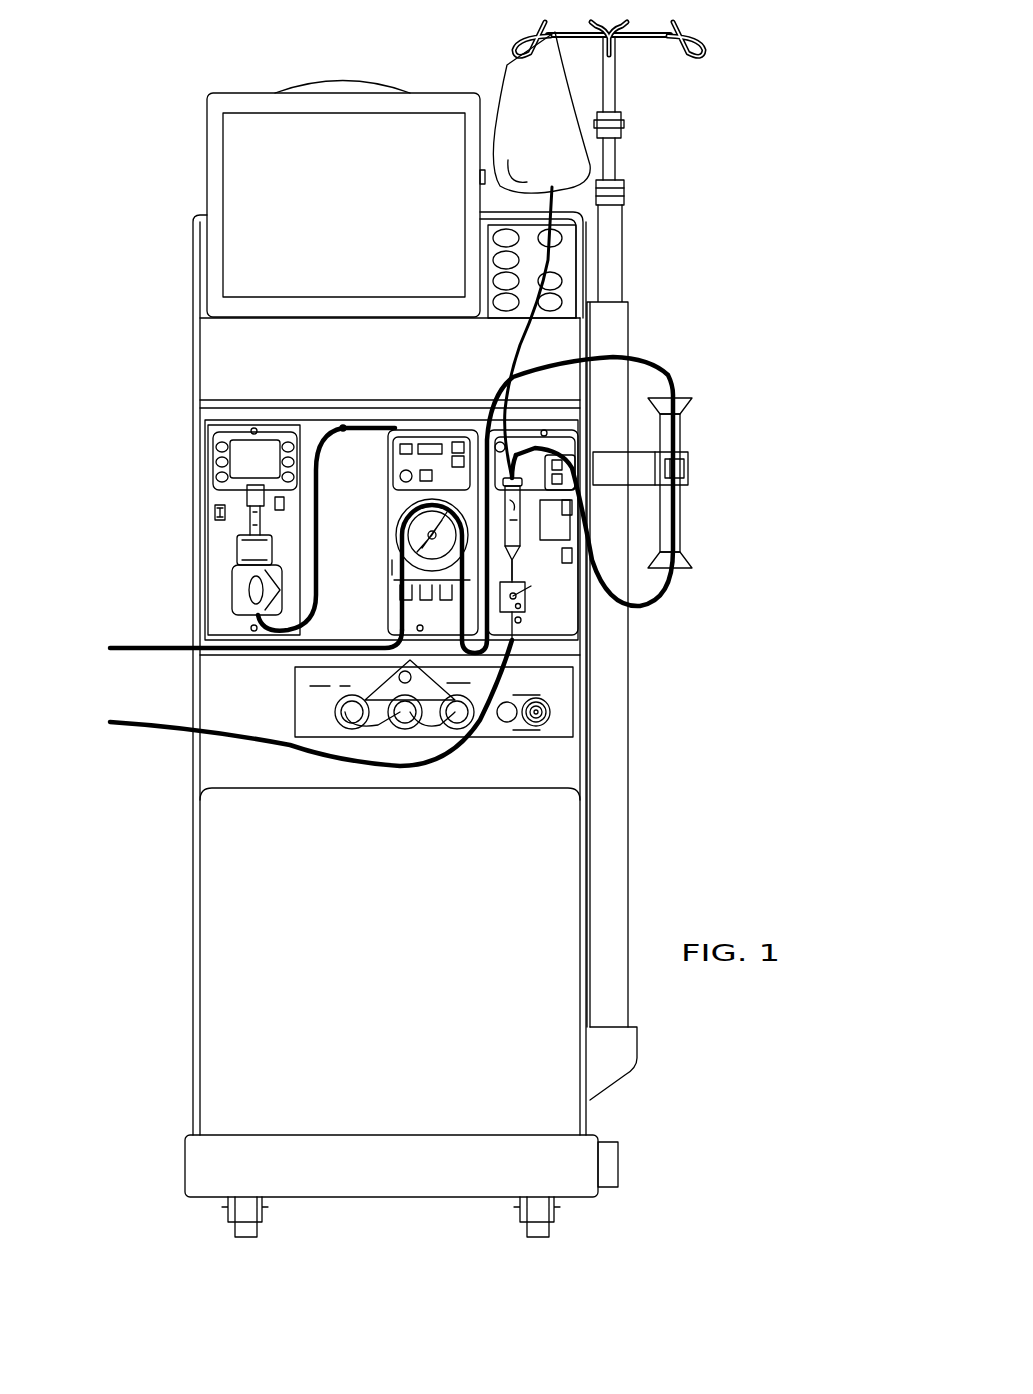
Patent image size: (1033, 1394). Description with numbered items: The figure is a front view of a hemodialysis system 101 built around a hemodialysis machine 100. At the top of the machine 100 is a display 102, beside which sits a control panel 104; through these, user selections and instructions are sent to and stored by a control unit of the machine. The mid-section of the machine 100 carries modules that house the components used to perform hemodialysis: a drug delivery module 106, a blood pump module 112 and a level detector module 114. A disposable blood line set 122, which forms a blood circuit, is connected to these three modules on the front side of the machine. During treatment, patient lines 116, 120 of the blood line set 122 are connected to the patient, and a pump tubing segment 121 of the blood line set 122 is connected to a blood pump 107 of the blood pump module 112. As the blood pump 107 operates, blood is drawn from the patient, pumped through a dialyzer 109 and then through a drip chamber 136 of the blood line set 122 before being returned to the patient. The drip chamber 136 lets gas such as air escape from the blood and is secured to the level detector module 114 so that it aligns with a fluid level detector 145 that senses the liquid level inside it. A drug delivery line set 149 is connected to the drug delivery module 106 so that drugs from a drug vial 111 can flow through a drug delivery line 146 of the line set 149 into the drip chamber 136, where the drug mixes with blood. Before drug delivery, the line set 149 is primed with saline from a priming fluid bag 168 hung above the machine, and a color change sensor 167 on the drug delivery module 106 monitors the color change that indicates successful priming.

The hemodialysis machine 100 is at (715, 813).
The hemodialysis system 101 is at (128, 106).
The display 102 is at (346, 205).
The control panel 104 is at (572, 258).
The drug delivery module 106 is at (335, 432).
The blood pump 107 is at (397, 517).
The dialyzer 109 is at (690, 505).
The drug vial 111 is at (250, 488).
The blood pump module 112 is at (432, 622).
The level detector module 114 is at (575, 605).
The patient line 116 is at (188, 646).
The patient line 120 is at (185, 716).
The pump tubing segment 121 is at (432, 505).
The blood line set 122 is at (672, 368).
The drip chamber 136 is at (515, 527).
The fluid level detector 145 is at (523, 512).
The drug delivery line 146 is at (245, 426).
The drug delivery line set 149 is at (366, 418).
The color change sensor 167 is at (225, 465).
The priming fluid bag 168 is at (541, 255).